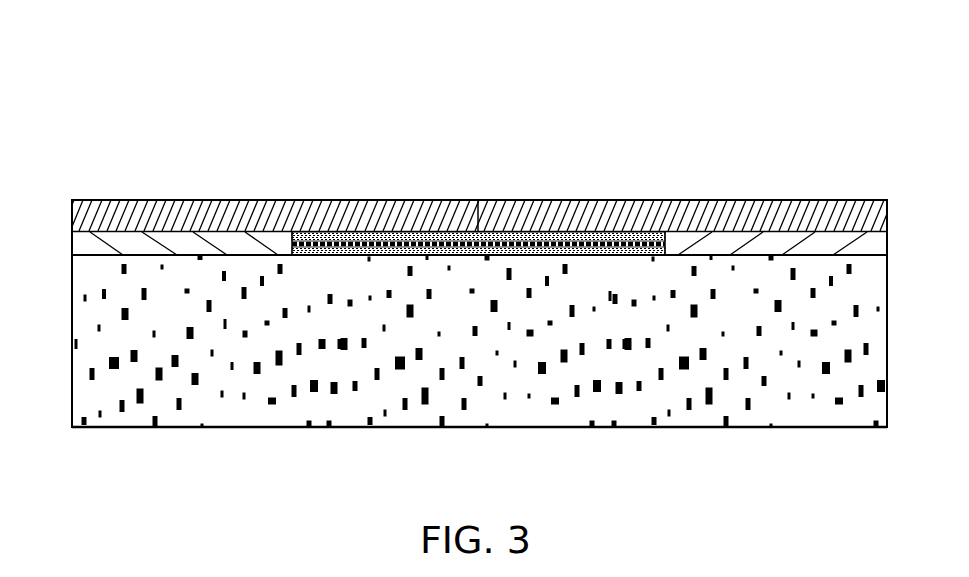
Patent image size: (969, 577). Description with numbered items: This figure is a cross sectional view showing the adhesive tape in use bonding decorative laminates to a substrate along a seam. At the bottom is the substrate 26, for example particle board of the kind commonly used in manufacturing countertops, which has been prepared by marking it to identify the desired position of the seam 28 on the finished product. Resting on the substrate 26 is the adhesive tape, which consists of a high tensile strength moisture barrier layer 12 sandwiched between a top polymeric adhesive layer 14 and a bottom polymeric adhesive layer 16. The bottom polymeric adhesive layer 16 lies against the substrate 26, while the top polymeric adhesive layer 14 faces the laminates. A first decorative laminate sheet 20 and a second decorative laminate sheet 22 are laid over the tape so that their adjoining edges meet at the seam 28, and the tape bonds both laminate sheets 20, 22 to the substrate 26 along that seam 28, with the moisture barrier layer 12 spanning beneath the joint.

The moisture barrier layer 12 is at (519, 248).
The top polymeric adhesive layer 14 is at (320, 202).
The bottom polymeric adhesive layer 16 is at (383, 247).
The first decorative laminate sheet 20 is at (650, 202).
The second decorative laminate sheet 22 is at (395, 202).
The substrate 26 is at (767, 358).
The seam 28 is at (478, 202).